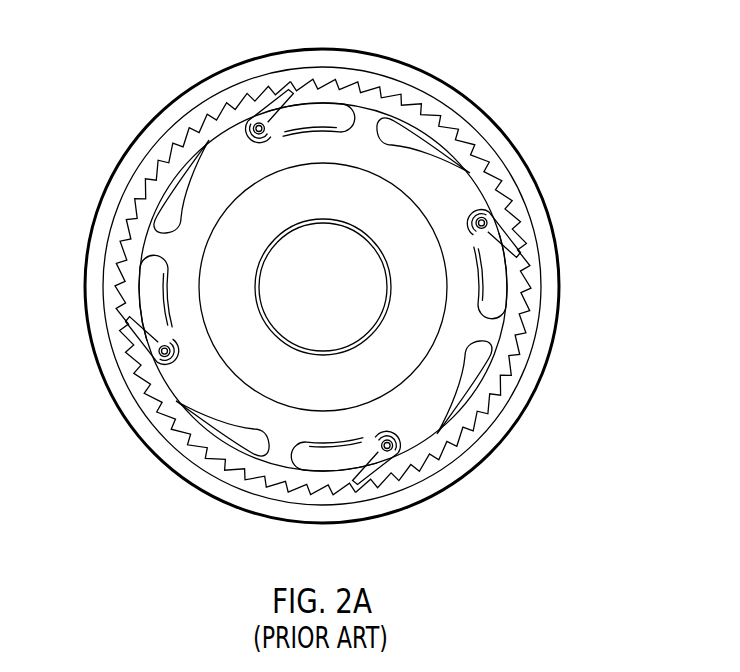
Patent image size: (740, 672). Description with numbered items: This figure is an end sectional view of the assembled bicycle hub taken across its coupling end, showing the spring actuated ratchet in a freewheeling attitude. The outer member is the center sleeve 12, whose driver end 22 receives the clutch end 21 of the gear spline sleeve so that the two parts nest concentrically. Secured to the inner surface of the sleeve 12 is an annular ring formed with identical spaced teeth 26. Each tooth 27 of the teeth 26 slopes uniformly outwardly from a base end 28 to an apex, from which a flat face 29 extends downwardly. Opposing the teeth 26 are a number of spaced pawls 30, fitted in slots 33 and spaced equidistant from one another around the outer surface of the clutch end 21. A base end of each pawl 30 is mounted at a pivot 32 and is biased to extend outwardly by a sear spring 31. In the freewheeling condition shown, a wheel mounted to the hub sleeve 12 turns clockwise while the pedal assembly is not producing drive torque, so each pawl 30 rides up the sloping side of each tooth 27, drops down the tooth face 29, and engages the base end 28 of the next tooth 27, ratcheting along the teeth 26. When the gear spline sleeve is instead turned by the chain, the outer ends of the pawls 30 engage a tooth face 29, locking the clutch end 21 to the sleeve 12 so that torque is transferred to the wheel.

The center sleeve 12 is at (362, 60).
The clutch end 21 is at (220, 160).
The driver end 22 is at (148, 148).
The teeth 26 is at (530, 272).
The tooth 27 is at (470, 208).
The base end 28 is at (137, 185).
The flat face 29 is at (122, 255).
The pawl 30 is at (488, 224).
The sear spring 31 is at (483, 214).
The pivot 32 is at (488, 218).
The slot 33 is at (500, 300).